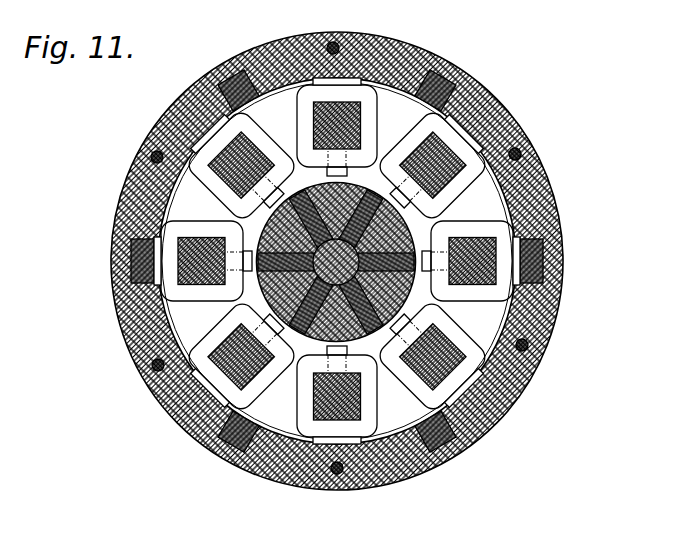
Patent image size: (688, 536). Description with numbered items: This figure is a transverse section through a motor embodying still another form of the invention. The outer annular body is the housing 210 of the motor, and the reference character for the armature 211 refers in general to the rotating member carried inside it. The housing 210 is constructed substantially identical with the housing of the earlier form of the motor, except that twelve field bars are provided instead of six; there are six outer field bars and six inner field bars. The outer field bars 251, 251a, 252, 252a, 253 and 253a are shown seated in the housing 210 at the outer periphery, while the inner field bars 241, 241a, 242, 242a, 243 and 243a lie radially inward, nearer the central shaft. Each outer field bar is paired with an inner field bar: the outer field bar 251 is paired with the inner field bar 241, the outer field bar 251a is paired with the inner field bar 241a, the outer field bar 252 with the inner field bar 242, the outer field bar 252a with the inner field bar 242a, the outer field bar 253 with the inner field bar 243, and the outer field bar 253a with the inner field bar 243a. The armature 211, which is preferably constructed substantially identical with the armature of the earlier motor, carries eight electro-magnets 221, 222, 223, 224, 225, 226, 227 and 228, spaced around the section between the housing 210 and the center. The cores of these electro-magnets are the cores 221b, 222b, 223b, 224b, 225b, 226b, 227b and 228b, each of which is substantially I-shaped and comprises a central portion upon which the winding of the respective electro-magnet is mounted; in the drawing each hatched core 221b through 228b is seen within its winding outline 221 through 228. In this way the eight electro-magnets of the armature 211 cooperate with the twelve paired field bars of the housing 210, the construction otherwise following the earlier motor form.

The housing 210 is at (452, 102).
The armature 211 is at (488, 214).
The electro-magnet 221 is at (365, 90).
The core 221b is at (336, 110).
The electro-magnet 222 is at (224, 137).
The core 222b is at (218, 153).
The electro-magnet 223 is at (162, 232).
The core 223b is at (190, 265).
The electro-magnet 224 is at (205, 358).
The core 224b is at (210, 382).
The electro-magnet 225 is at (312, 427).
The core 225b is at (345, 405).
The electro-magnet 226 is at (474, 358).
The core 226b is at (438, 368).
The electro-magnet 227 is at (503, 232).
The core 227b is at (497, 268).
The electro-magnet 228 is at (447, 130).
The core 228b is at (449, 153).
The inner field bar 241 is at (297, 184).
The inner field bar 241a is at (258, 242).
The inner field bar 242 is at (298, 333).
The inner field bar 242a is at (374, 340).
The inner field bar 243 is at (412, 283).
The inner field bar 243a is at (368, 190).
The outer field bar 251 is at (237, 74).
The outer field bar 251a is at (133, 263).
The outer field bar 252 is at (228, 432).
The outer field bar 252a is at (448, 437).
The outer field bar 253 is at (534, 252).
The outer field bar 253a is at (443, 78).